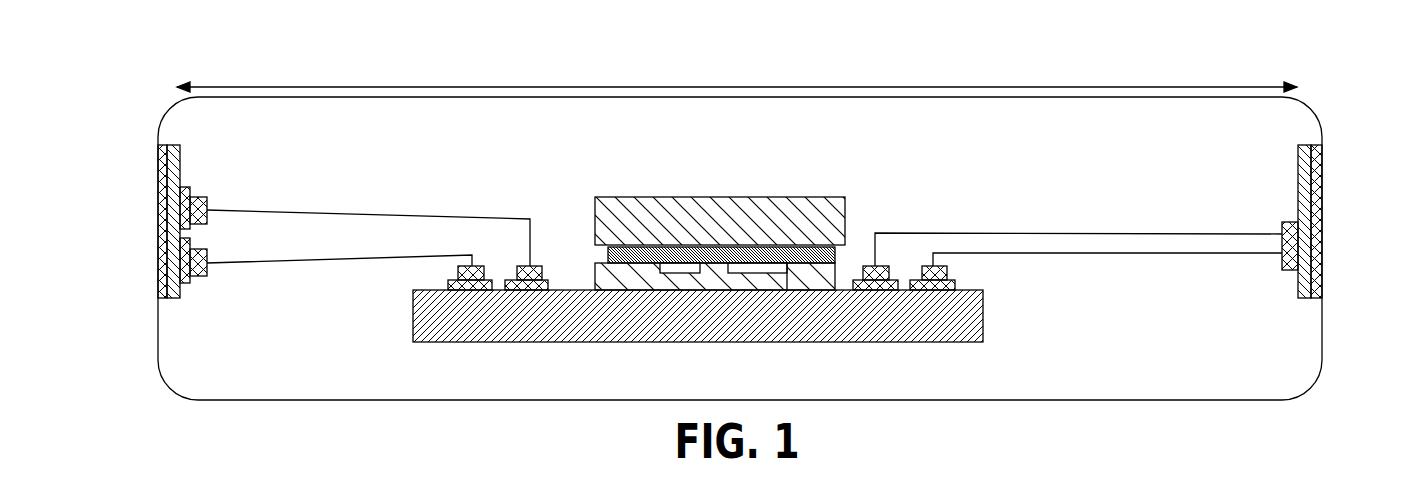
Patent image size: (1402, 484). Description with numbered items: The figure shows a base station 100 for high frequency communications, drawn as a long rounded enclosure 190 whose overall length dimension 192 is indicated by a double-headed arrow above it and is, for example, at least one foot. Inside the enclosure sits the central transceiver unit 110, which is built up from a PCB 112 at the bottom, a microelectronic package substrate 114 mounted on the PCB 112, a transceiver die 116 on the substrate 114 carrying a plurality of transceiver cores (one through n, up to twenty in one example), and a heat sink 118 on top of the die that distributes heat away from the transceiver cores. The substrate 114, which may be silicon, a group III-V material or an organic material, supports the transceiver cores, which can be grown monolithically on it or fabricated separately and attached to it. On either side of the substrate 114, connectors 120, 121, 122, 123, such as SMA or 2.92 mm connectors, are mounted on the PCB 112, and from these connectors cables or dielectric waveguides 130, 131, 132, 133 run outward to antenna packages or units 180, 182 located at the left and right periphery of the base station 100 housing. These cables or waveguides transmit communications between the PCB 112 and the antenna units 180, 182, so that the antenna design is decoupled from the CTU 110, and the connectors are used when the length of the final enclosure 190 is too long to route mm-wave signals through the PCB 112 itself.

The base station 100 is at (699, 66).
The central transceiver unit 110 is at (731, 151).
The PCB 112 is at (610, 342).
The microelectronic package substrate 114 is at (595, 277).
The transceiver die 116 is at (838, 255).
The heat sink 118 is at (786, 233).
The connector 120 is at (888, 274).
The connector 121 is at (948, 275).
The connector 122 is at (516, 268).
The connector 123 is at (452, 283).
The cable or dielectric waveguide 130 is at (977, 233).
The cable or dielectric waveguide 131 is at (1167, 258).
The cable or dielectric waveguide 132 is at (453, 215).
The cable or dielectric waveguide 133 is at (240, 263).
The antenna package or unit 180 is at (1330, 170).
The antenna package or unit 182 is at (150, 205).
The enclosure 190 is at (1187, 184).
The length dimension 192 is at (1078, 87).